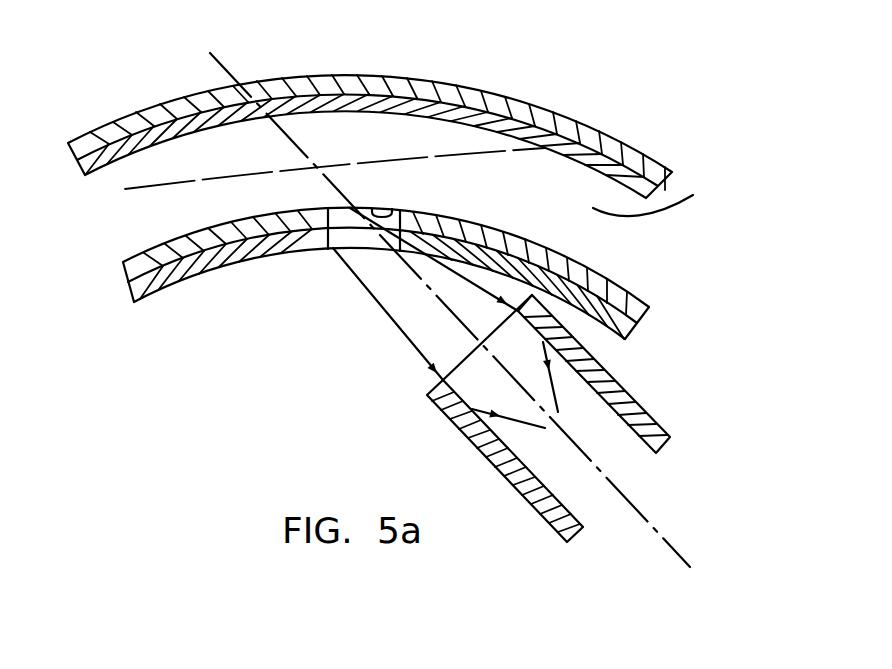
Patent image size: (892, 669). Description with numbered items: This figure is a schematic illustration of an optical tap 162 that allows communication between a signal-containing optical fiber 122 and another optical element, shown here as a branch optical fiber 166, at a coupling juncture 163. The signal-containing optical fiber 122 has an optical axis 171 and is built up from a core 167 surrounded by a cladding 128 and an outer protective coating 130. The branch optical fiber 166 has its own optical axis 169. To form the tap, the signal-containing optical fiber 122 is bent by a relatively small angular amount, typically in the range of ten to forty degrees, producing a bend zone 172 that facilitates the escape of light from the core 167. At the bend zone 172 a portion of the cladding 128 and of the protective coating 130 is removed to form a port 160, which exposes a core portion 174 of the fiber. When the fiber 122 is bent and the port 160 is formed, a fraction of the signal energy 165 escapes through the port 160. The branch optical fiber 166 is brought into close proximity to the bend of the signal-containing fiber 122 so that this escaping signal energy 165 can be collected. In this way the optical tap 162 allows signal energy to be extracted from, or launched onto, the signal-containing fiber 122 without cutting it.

The signal-containing optical fiber 122 is at (370, 113).
The bend zone 172 is at (409, 73).
The optical axis 171 is at (368, 167).
The core 167 is at (693, 195).
The cladding 128 is at (428, 259).
The protective coating 130 is at (648, 336).
The port 160 is at (326, 258).
The core portion 174 is at (390, 212).
The optical axis 169 is at (634, 509).
The coupling juncture 163 is at (364, 327).
The optical tap 162 is at (168, 405).
The signal energy 165 is at (403, 356).
The branch optical fiber 166 is at (618, 384).